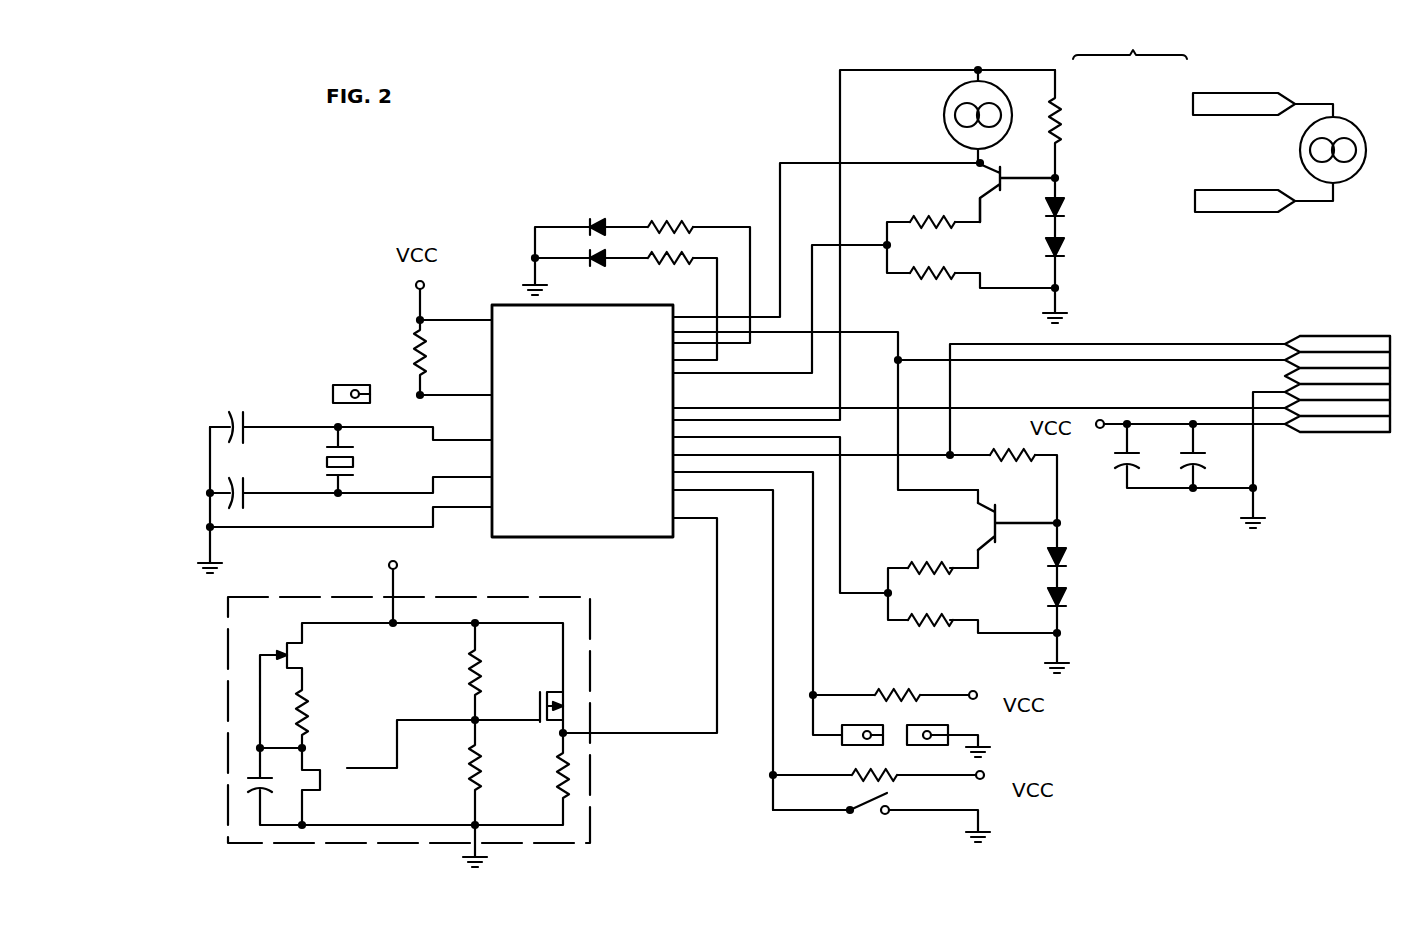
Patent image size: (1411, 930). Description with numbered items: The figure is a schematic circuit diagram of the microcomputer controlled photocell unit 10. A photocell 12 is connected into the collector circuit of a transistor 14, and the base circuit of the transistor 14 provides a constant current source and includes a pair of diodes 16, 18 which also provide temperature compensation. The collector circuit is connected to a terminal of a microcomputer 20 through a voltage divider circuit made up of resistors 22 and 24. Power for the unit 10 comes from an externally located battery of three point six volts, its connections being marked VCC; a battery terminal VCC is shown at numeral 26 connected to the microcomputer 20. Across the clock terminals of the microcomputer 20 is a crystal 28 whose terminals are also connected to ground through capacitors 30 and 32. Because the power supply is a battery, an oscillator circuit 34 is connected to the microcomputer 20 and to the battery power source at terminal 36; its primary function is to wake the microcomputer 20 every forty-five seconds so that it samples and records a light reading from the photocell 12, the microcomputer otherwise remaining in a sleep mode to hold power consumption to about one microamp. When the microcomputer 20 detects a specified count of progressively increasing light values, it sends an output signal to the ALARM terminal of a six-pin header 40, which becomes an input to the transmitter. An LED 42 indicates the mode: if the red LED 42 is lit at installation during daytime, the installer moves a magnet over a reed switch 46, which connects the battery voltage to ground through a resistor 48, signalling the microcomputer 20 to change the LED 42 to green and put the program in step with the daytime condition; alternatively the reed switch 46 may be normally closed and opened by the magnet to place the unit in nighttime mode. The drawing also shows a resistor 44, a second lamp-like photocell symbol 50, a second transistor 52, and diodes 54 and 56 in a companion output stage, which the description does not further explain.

The microcomputer controlled photocell unit 10 is at (747, 150).
The photocell 12 is at (955, 90).
The transistor 14 is at (1004, 170).
The diode 16 is at (1077, 196).
The diode 18 is at (1077, 261).
The microcomputer 20 is at (579, 431).
The resistor 22 is at (918, 222).
The resistor 24 is at (938, 275).
The battery terminal VCC 26 is at (414, 290).
The crystal 28 is at (327, 460).
The capacitor 30 is at (238, 415).
The capacitor 32 is at (250, 500).
The oscillator circuit 34 is at (595, 722).
The terminal 36 is at (405, 562).
The 6-pin header 40 is at (1300, 435).
The LED 42 is at (588, 220).
The resistor 44 is at (1004, 465).
The reed switch 46 is at (870, 813).
The resistor 48 is at (852, 778).
The lamp 50 is at (1352, 120).
The transistor 52 is at (992, 544).
The diode 54 is at (1065, 551).
The diode 56 is at (1063, 606).